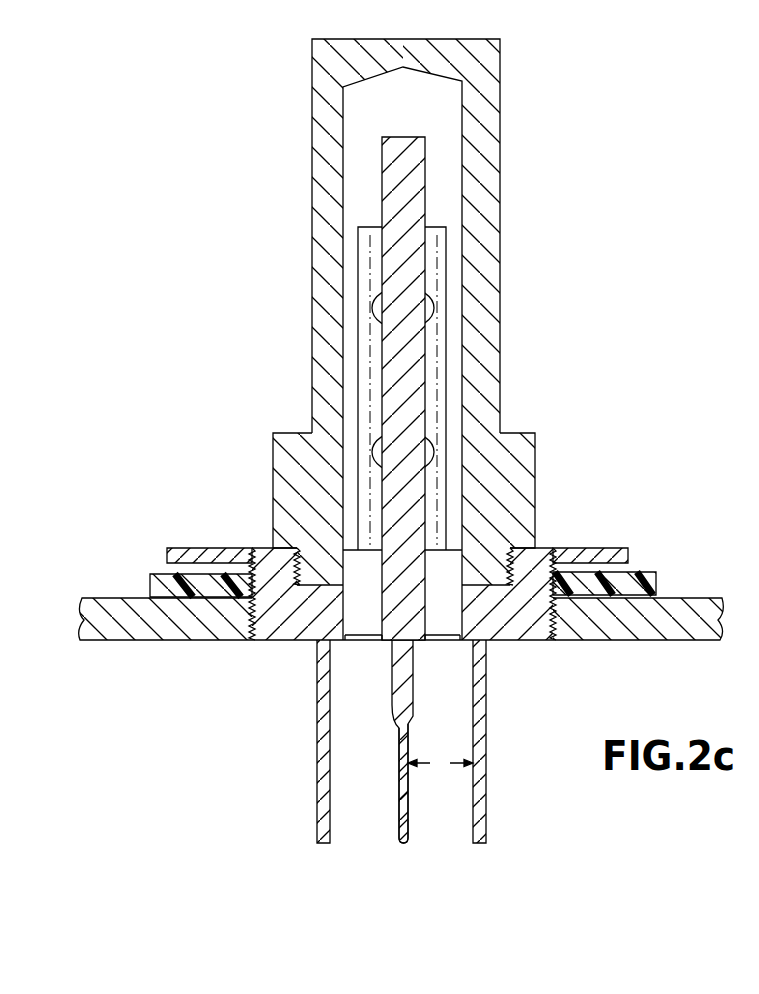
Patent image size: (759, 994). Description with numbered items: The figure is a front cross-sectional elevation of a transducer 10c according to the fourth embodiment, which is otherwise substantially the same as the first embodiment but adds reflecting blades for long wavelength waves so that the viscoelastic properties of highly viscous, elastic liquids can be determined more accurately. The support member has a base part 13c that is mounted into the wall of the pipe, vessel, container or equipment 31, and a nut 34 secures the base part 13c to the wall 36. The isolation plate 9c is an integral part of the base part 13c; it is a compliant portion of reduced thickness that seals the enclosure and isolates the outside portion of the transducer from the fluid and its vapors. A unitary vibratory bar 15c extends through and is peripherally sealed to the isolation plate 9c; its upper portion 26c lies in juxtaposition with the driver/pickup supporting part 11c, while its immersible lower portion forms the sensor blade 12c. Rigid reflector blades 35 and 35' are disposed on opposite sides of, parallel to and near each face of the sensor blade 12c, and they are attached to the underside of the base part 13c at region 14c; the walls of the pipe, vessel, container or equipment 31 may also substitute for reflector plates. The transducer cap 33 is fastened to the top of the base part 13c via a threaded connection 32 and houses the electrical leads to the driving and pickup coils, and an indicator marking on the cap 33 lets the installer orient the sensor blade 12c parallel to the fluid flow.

The transducer 10c is at (135, 345).
The transducer cap 33 is at (312, 178).
The threaded connection 32 is at (273, 513).
The region of the base part 14c is at (317, 643).
The base part 13c is at (630, 549).
The wall 36 is at (168, 556).
The nut 34 is at (657, 585).
The pipe, vessel, container or equipment 31 is at (700, 640).
The vibratory bar 15c is at (402, 249).
The driver/pickup supporting part 11c is at (447, 368).
The upper portion of the bar 26c is at (382, 362).
The sensor blade 12c is at (405, 840).
The isolation plate 9c is at (447, 641).
The reflector blade 35 is at (279, 741).
The reflector blade 35' is at (523, 741).